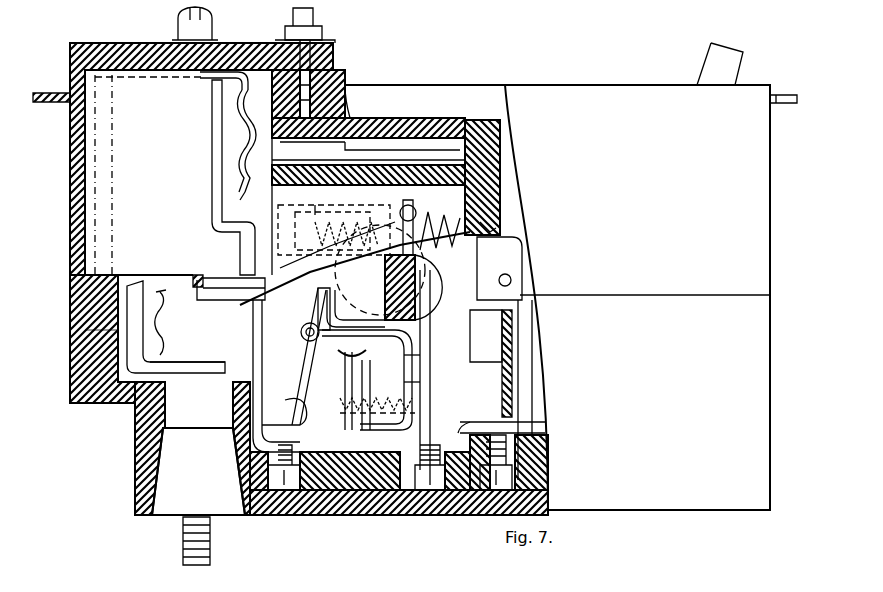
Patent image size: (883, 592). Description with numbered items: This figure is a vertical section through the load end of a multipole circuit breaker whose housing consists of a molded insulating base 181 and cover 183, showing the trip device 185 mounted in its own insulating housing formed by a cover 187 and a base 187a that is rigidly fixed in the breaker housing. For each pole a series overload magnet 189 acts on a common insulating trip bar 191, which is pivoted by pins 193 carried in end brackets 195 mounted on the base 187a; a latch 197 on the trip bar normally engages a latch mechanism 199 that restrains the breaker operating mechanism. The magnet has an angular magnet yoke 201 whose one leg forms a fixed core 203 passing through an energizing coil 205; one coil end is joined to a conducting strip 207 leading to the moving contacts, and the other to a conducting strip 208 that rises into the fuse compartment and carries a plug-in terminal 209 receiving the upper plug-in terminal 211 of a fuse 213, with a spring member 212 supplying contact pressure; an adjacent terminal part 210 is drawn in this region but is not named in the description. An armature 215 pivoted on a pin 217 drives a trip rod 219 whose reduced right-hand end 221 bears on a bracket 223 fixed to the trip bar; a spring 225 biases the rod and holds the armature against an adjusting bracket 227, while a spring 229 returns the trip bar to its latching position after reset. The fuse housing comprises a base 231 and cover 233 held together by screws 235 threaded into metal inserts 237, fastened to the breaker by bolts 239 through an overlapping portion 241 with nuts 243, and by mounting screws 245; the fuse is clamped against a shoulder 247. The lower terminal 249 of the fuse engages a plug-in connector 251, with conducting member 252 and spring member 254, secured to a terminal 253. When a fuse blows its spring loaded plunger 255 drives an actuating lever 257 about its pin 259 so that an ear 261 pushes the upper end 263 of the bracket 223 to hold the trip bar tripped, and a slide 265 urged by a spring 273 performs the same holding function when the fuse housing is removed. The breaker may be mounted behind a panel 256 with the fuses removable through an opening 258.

The base 181 is at (768, 383).
The cover 183 is at (768, 232).
The trip device 185 is at (452, 205).
The cover 187 is at (500, 196).
The base 187a is at (363, 510).
The overload magnet 189 is at (406, 383).
The trip bar 191 is at (420, 286).
The pin 193 is at (372, 322).
The end bracket 195 is at (290, 310).
The latch 197 is at (495, 269).
The latch mechanism 199 is at (512, 254).
The magnet yoke 201 is at (431, 339).
The fixed core 203 is at (339, 391).
The energizing coil 205 is at (367, 380).
The conducting strip 207 is at (470, 420).
The conducting strip 208 is at (255, 340).
The plug-in terminal 209 is at (226, 165).
The terminal tab 210 is at (220, 84).
The plug-in terminal 211 is at (236, 133).
The spring member 212 is at (253, 190).
The fuse 213 is at (118, 160).
The armature 215 is at (300, 374).
The pin 217 is at (306, 320).
The trip rod 219 is at (284, 444).
The reduced right-hand end 221 is at (414, 397).
The bracket 223 is at (430, 356).
The spring 225 is at (405, 412).
The adjusting bracket 227 is at (325, 300).
The spring 229 is at (488, 226).
The base 231 is at (80, 306).
The cover 233 is at (136, 43).
The screw 235 is at (115, 226).
The metal insert 237 is at (74, 44).
The bolt 239 is at (333, 66).
The overlapping portion 241 is at (333, 52).
The nut 243 is at (319, 27).
The mounting screw 245 is at (214, 24).
The shoulder 247 is at (103, 272).
The lower terminal 249 is at (150, 278).
The plug-in connector 251 is at (195, 336).
The conducting member 252 is at (85, 333).
The terminal 253 is at (192, 415).
The spring member 254 is at (176, 305).
The spring loaded plunger 255 is at (200, 278).
The panel 256 is at (58, 93).
The actuating lever 257 is at (244, 292).
The opening 258 is at (70, 104).
The pin 259 is at (315, 234).
The ear 261 is at (432, 234).
The upper end 263 is at (409, 204).
The slide 265 is at (320, 201).
The spring 273 is at (346, 217).